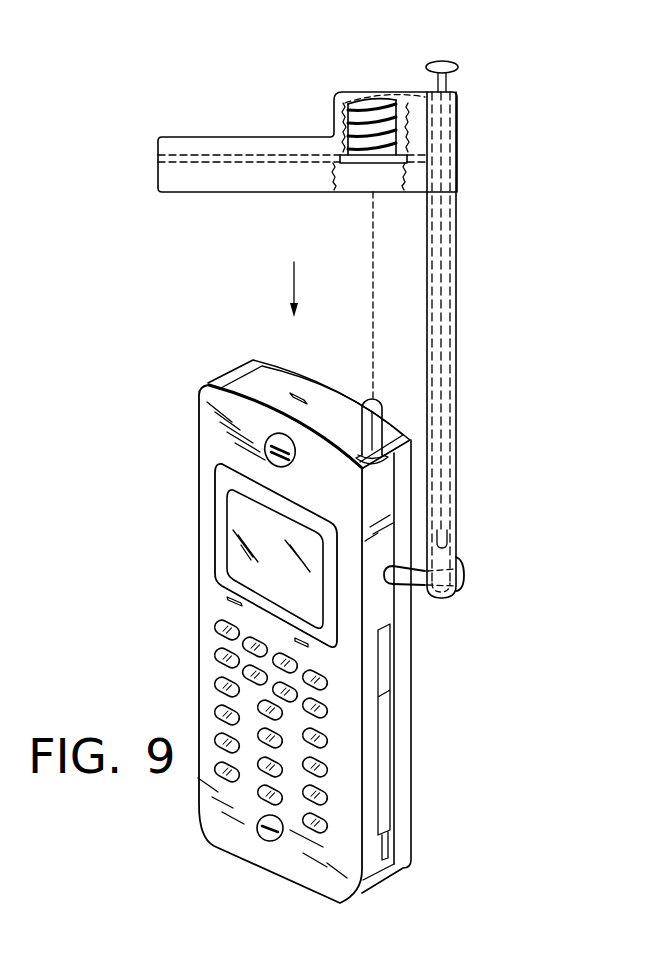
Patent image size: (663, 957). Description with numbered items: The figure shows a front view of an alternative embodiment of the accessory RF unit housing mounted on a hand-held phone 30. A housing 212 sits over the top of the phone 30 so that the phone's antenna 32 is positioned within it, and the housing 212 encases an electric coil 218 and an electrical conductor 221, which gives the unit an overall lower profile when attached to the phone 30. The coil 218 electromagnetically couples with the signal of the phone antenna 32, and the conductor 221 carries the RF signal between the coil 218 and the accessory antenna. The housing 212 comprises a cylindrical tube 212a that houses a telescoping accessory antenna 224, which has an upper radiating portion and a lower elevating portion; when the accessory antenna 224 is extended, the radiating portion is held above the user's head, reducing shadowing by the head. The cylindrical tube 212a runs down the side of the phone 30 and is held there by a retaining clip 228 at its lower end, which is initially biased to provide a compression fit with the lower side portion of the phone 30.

The hand-held phone 30 is at (150, 501).
The antenna 32 is at (367, 400).
The housing 212 is at (258, 137).
The cylindrical tube 212a is at (458, 300).
The electric coil 218 is at (373, 118).
The electrical conductor 221 is at (397, 107).
The telescoping accessory antenna 224 is at (452, 200).
The retaining clip 228 is at (464, 565).